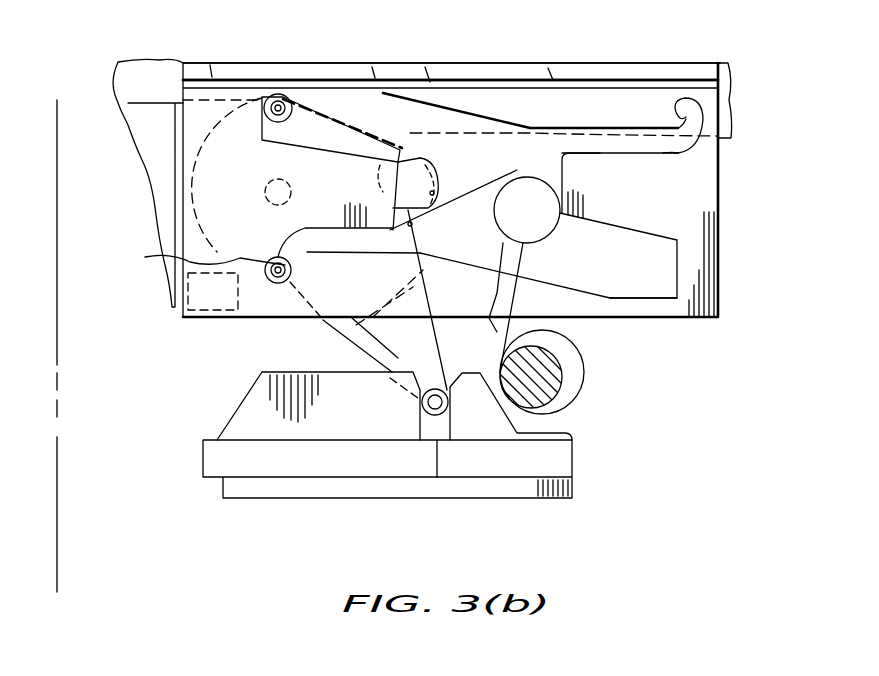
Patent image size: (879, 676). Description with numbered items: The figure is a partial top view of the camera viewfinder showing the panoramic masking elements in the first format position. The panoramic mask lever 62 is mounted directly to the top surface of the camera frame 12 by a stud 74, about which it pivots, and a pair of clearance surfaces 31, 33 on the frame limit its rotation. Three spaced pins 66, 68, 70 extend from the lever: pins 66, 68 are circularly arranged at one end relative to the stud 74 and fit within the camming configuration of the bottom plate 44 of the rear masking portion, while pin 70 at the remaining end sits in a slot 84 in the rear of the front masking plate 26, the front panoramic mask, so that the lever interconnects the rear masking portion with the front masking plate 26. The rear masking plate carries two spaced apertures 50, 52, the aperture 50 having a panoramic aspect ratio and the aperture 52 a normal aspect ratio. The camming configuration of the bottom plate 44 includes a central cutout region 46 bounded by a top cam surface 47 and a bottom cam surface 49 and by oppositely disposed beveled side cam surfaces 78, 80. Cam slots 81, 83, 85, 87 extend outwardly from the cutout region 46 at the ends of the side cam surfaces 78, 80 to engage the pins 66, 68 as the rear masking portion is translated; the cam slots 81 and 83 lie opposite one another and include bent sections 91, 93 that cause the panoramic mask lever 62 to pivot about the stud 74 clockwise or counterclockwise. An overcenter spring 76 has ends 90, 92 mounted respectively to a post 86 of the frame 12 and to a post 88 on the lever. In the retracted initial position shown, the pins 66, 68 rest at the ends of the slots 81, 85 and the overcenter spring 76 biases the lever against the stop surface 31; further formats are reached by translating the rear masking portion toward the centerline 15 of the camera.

The frame 12 is at (714, 118).
The centerline 15 is at (60, 505).
The front masking plate 26 is at (210, 450).
The clearance surface 31 is at (345, 108).
The clearance surface 33 is at (238, 302).
The bottom plate 44 is at (693, 200).
The cutout region 46 is at (533, 147).
The top cam surface 47 is at (450, 100).
The bottom cam surface 49 is at (494, 318).
The aperture 50 is at (318, 62).
The aperture 52 is at (497, 67).
The panoramic mask lever 62 is at (215, 152).
The pin 66 is at (263, 97).
The pin 68 is at (270, 262).
The pin 70 is at (420, 403).
The stud 74 is at (272, 185).
The overcenter spring 76 is at (582, 252).
The beveled side cam surface 78 is at (385, 190).
The beveled side cam surface 80 is at (563, 182).
The cam slot 81 is at (287, 225).
The cam slot 83 is at (633, 147).
The slot 84 is at (437, 428).
The cam slot 85 is at (383, 115).
The post 86 is at (563, 398).
The cam slot 87 is at (625, 282).
The post 88 is at (432, 195).
The spring end 90 is at (583, 372).
The bent section 91 is at (201, 257).
The spring end 92 is at (410, 224).
The bent section 93 is at (690, 117).